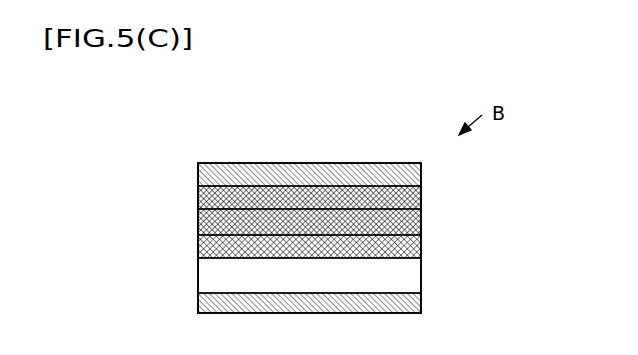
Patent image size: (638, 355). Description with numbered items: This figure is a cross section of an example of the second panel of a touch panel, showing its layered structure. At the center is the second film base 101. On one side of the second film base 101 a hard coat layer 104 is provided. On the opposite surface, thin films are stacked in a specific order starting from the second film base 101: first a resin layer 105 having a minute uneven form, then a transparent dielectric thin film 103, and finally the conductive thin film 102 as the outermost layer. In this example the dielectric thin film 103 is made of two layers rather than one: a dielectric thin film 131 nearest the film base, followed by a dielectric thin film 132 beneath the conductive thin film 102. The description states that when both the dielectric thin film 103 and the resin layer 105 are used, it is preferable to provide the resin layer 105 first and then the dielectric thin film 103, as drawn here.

The conductive thin film 102 is at (421, 173).
The dielectric thin film 132 is at (421, 201).
The dielectric thin film 131 is at (421, 224).
The transparent dielectric thin film 103 is at (391, 210).
The resin layer 105 is at (421, 248).
The second film base 101 is at (409, 274).
The hard coat layer 104 is at (421, 303).